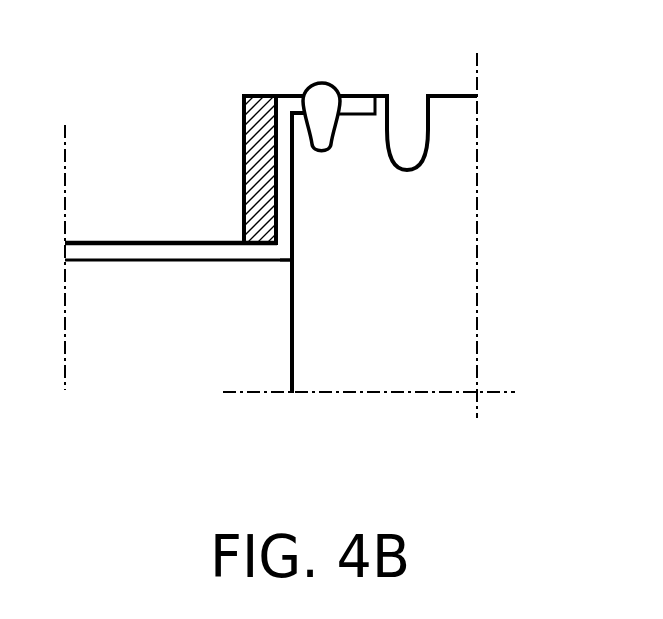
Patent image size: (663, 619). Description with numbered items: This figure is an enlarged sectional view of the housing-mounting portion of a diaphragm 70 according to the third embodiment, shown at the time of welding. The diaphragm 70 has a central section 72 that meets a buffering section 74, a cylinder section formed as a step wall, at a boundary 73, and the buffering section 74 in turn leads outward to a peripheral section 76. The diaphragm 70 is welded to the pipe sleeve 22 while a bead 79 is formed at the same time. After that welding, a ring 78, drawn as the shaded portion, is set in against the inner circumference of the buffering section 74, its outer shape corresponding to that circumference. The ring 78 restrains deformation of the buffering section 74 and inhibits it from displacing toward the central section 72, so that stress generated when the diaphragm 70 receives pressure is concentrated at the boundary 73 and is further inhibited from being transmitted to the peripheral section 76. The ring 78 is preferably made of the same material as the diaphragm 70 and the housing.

The pipe sleeve 22 is at (477, 235).
The diaphragm 70 is at (133, 240).
The central section 72 is at (113, 262).
The boundary 73 is at (290, 262).
The buffering section 74 is at (295, 212).
The peripheral section 76 is at (365, 95).
The ring 78 is at (253, 95).
The bead 79 is at (320, 80).